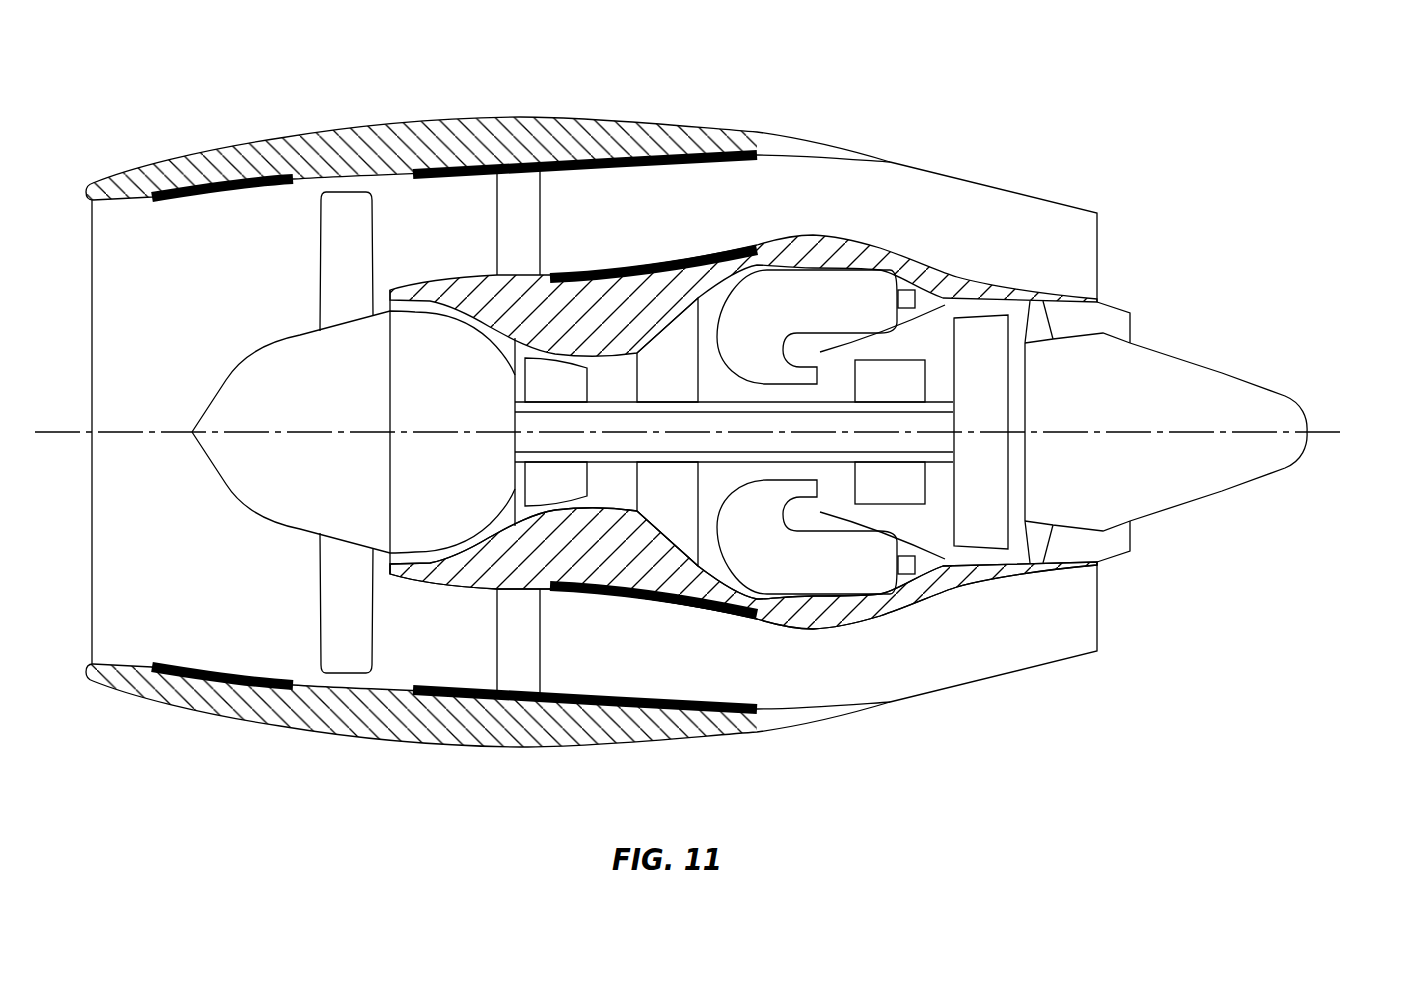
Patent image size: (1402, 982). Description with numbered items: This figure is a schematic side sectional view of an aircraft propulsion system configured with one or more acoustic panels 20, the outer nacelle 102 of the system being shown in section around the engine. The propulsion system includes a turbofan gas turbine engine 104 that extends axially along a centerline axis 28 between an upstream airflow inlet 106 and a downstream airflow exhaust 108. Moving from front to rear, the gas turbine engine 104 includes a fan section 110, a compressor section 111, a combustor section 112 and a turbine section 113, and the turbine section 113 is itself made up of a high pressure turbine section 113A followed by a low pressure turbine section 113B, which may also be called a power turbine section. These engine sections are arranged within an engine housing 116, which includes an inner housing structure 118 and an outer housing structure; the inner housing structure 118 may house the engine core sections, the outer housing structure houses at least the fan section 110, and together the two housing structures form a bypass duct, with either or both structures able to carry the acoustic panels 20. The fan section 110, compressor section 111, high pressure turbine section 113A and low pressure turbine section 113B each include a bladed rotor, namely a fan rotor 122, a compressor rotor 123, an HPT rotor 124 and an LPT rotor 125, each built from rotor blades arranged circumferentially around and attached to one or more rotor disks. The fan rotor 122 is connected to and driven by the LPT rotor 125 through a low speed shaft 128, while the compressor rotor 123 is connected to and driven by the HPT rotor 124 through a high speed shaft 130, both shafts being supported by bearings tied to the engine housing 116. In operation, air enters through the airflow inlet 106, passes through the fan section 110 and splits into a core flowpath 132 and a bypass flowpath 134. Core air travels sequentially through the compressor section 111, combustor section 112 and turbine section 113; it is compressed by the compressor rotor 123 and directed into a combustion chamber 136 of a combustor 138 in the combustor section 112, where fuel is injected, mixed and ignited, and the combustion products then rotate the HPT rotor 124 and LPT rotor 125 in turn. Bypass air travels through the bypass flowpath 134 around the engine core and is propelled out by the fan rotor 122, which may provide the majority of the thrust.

The acoustic panel 20 is at (172, 191).
The centerline axis 28 is at (1360, 432).
The nacelle 102 is at (365, 122).
The gas turbine engine 104 is at (982, 127).
The airflow inlet 106 is at (92, 280).
The airflow exhaust 108 is at (1132, 330).
The fan section 110 is at (272, 247).
The compressor section 111 is at (609, 374).
The combustor section 112 is at (805, 267).
The turbine section 113 is at (955, 310).
The high pressure turbine section 113A is at (950, 565).
The low pressure turbine section 113B is at (990, 562).
The engine housing 116 is at (450, 98).
The inner housing structure 118 is at (757, 237).
The fan rotor 122 is at (253, 510).
The compressor rotor 123 is at (640, 513).
The HPT rotor 124 is at (925, 478).
The LPT rotor 125 is at (1010, 453).
The low speed shaft 128 is at (513, 446).
The high speed shaft 130 is at (733, 404).
The core flowpath 132 is at (1070, 320).
The bypass flowpath 134 is at (470, 251).
The combustion chamber 136 is at (845, 585).
The combustor 138 is at (792, 597).